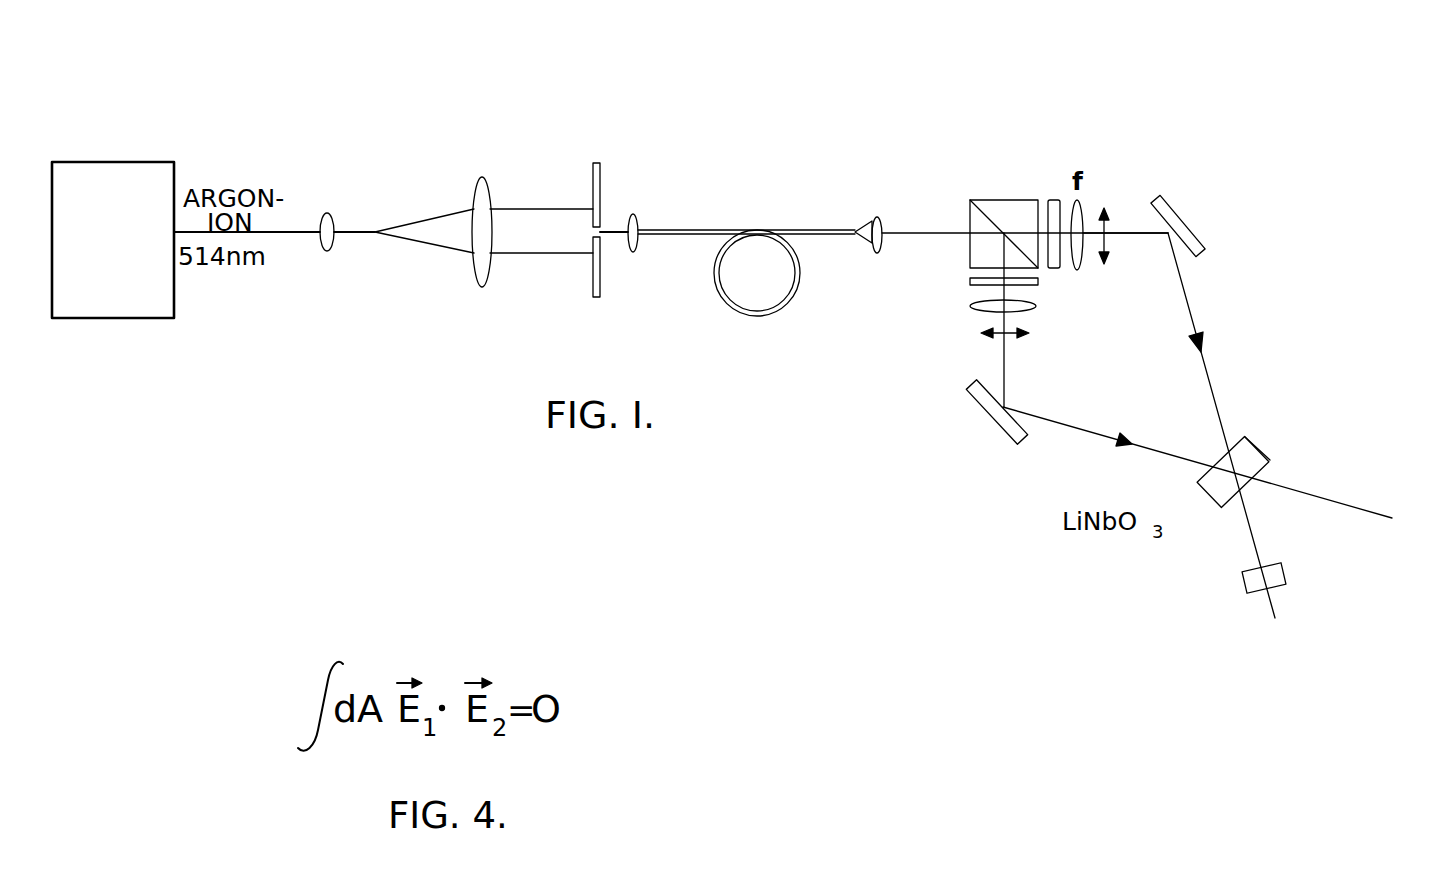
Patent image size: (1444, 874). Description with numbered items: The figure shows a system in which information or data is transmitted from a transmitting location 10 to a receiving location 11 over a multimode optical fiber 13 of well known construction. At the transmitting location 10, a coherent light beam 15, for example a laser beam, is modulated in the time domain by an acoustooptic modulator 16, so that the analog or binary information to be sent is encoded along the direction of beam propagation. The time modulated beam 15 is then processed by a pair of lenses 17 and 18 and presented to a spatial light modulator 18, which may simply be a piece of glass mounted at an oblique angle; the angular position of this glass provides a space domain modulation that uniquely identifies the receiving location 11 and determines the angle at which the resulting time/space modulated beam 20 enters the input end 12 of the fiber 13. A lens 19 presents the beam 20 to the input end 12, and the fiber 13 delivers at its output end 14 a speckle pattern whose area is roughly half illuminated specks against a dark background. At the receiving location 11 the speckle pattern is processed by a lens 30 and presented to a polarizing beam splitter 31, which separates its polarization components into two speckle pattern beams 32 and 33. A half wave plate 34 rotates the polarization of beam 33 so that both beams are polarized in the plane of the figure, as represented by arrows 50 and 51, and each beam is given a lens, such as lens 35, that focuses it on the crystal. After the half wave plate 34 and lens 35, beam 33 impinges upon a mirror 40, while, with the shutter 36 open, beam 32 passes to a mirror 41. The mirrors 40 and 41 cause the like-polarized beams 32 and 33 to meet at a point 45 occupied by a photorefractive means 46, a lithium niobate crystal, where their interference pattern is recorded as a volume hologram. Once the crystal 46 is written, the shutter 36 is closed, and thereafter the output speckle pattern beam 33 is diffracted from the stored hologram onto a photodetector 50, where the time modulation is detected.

The transmitting location 10 is at (222, 92).
The receiving location 11 is at (1116, 104).
The input end 12 is at (663, 230).
The multimode optical fiber 13 is at (777, 221).
The output end 14 is at (856, 236).
The coherent light beam 15 is at (298, 233).
The acoustooptic modulator 16 is at (137, 162).
The lens 17 is at (330, 213).
The spatial light modulator 18 is at (593, 178).
The lens 19 is at (637, 215).
The time/space modulated beam 20 is at (607, 238).
The lens 30 is at (880, 216).
The polarizing beam splitter 31 is at (970, 204).
The speckle pattern beam 32 is at (1127, 232).
The speckle pattern beam 33 is at (1004, 387).
The half wave plate 34 is at (1040, 286).
The lens 35 is at (1032, 312).
The shutter 36 is at (1055, 270).
The mirror 40 is at (990, 418).
The mirror 41 is at (1195, 228).
The point 45 is at (1262, 452).
The photorefractive means 46 is at (1248, 438).
The arrow / photodetector 50 is at (1108, 260).
The arrow 51 is at (980, 334).